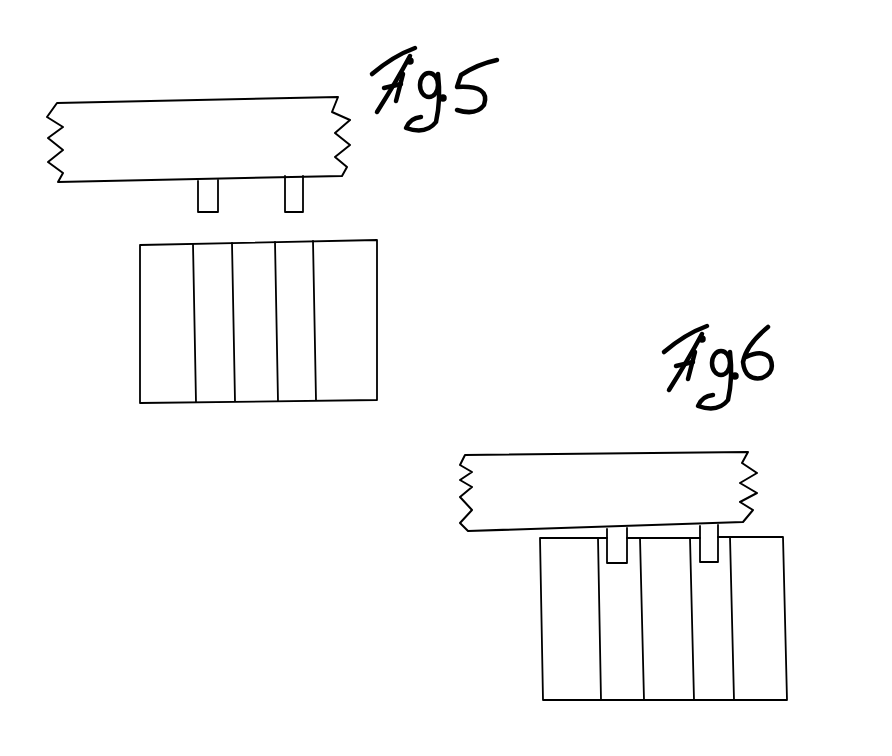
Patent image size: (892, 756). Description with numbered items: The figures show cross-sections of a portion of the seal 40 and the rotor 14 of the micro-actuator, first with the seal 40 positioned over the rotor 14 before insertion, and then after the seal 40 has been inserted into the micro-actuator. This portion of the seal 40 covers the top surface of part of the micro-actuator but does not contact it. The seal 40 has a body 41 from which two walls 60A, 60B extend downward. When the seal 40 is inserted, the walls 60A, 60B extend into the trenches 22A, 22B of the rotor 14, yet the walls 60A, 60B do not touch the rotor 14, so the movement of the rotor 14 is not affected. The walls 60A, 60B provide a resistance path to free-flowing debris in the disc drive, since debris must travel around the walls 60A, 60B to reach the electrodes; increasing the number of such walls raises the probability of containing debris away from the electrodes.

In FIG. 5, the rotor 14 is at (152, 327).
In FIG. 6, the rotor 14 is at (555, 622).
In FIG. 5, the trench 22A is at (215, 392).
In FIG. 6, the trench 22A is at (610, 660).
In FIG. 5, the trench 22B is at (298, 390).
In FIG. 6, the trench 22B is at (723, 645).
In FIG. 5, the seal 40 is at (262, 97).
In FIG. 6, the seal 40 is at (617, 451).
In FIG. 5, the body 41 is at (162, 117).
In FIG. 6, the body 41 is at (562, 468).
In FIG. 5, the wall 60A is at (203, 198).
In FIG. 6, the wall 60A is at (620, 552).
In FIG. 5, the wall 60B is at (297, 198).
In FIG. 6, the wall 60B is at (712, 547).